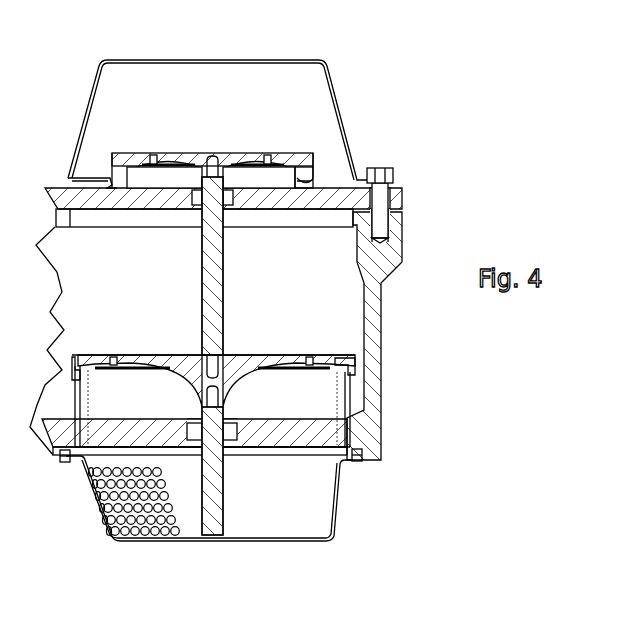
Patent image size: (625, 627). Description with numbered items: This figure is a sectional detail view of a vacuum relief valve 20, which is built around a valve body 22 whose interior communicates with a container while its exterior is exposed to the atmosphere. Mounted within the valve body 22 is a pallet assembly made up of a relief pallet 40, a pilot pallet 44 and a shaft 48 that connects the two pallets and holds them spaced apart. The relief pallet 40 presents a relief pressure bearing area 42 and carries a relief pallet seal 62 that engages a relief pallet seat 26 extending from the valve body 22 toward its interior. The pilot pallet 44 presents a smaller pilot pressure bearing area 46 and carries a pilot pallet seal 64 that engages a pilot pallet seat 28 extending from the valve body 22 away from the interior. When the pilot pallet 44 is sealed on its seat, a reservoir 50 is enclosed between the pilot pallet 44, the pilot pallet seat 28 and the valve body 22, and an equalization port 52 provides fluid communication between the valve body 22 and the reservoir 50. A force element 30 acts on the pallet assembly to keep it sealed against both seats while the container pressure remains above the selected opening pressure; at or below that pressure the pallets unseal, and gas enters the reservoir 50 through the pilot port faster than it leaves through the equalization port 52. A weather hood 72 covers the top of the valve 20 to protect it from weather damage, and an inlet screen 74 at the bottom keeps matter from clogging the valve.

The relief valve 20 is at (395, 143).
The valve body 22 is at (370, 287).
The relief pallet seat 26 is at (80, 383).
The pilot pallet seat 28 is at (300, 182).
The force element 30 is at (213, 477).
The relief pallet 40 is at (268, 362).
The relief pressure bearing area 42 is at (170, 353).
The pilot pallet 44 is at (257, 148).
The pilot pressure bearing area 46 is at (145, 172).
The shaft 48 is at (213, 303).
The reservoir 50 is at (178, 178).
The equalization port 52 is at (223, 200).
The relief pallet seal 62 is at (85, 367).
The pilot pallet seal 64 is at (303, 162).
The weather hood 72 is at (199, 61).
The inlet screen 74 is at (147, 540).